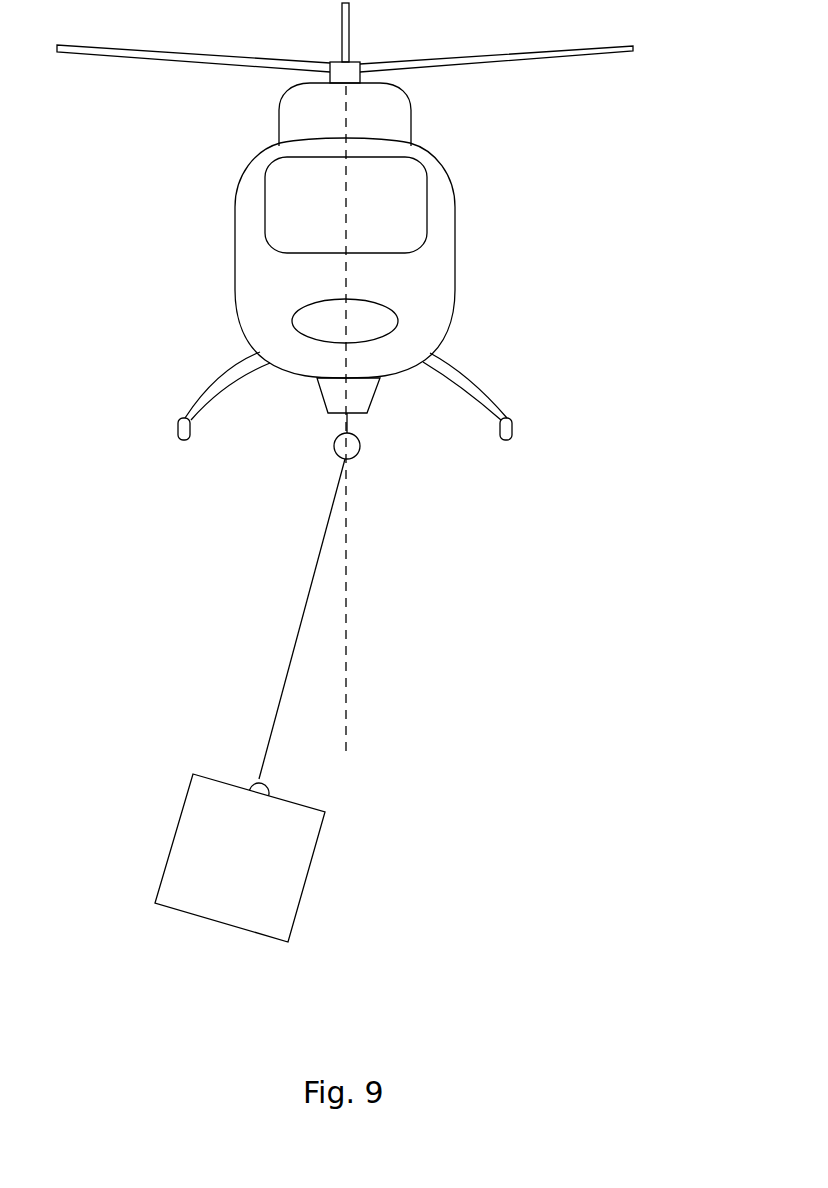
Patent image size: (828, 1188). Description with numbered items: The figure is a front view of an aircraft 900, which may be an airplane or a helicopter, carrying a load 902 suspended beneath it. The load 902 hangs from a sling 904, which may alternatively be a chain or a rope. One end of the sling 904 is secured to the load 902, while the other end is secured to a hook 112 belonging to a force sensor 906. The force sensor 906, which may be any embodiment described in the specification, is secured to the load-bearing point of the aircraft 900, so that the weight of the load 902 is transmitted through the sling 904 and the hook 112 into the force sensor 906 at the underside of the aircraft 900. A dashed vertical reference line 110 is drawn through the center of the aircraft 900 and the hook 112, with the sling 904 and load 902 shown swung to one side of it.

The aircraft 900 is at (442, 272).
The load 902 is at (288, 860).
The sling 904 is at (277, 717).
The force sensor 906 is at (362, 395).
The hook 112 is at (333, 447).
The vertical axis 110 is at (343, 720).